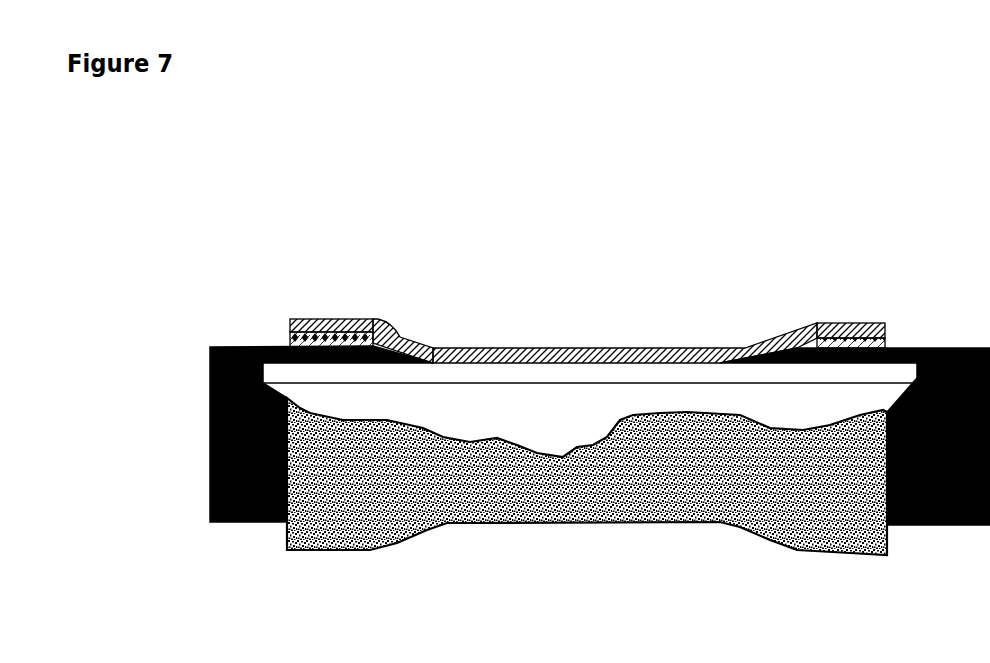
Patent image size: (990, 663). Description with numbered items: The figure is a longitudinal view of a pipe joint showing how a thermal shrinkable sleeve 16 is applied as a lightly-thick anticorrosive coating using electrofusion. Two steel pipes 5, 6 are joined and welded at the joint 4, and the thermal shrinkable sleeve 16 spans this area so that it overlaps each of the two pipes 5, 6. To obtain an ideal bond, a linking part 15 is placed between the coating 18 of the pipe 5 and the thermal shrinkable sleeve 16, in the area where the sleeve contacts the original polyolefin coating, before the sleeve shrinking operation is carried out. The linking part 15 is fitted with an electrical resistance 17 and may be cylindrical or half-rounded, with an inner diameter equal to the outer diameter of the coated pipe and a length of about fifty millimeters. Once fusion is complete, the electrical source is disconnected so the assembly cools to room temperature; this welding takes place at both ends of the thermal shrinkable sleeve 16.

The joint 4 is at (588, 369).
The steel pipe 5 is at (692, 370).
The steel pipe 6 is at (485, 375).
The linking part 15 is at (289, 318).
The thermal shrinkable sleeve 16 is at (400, 337).
The electrical resistance 17 is at (863, 322).
The coating 18 is at (231, 347).